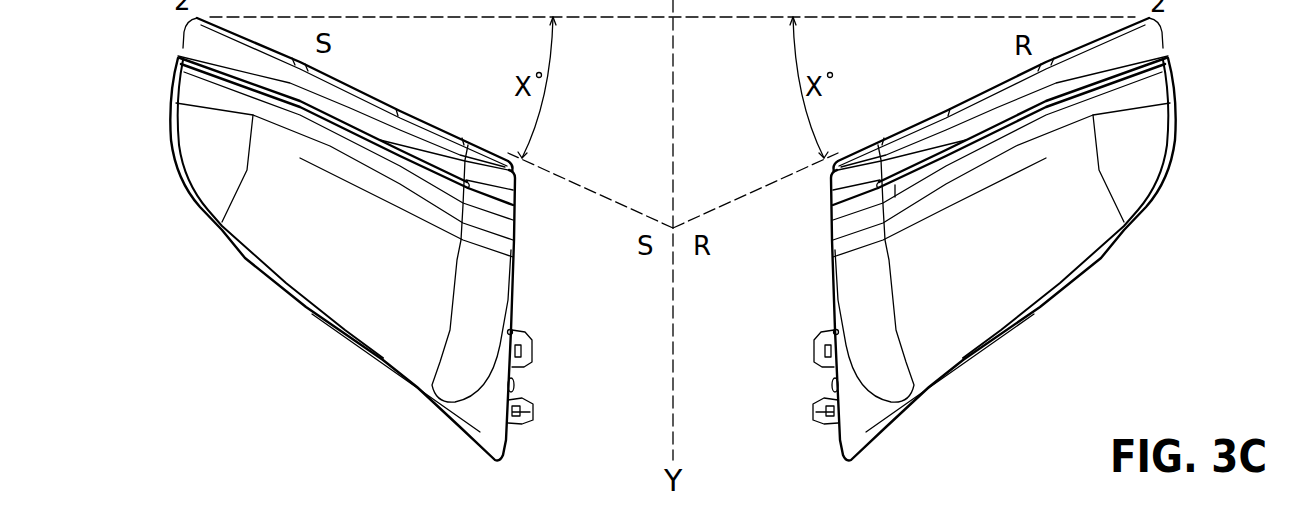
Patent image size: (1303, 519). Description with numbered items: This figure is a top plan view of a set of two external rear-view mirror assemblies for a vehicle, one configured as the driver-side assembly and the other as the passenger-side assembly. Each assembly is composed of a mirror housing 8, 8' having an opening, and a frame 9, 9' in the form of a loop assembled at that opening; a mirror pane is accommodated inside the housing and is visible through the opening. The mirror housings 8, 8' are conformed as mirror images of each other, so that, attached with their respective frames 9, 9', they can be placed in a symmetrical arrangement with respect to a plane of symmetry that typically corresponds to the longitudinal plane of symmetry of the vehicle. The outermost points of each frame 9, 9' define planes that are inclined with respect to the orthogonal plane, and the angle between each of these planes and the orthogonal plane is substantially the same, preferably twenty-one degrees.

The mirror housing 8 is at (994, 259).
The mirror housing 8' is at (351, 259).
The frame 9 is at (1057, 94).
The frame 9' is at (285, 94).